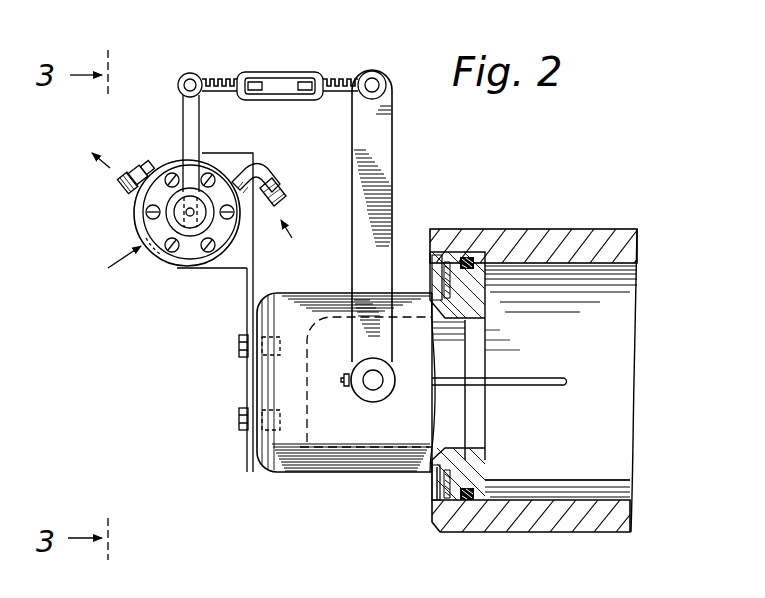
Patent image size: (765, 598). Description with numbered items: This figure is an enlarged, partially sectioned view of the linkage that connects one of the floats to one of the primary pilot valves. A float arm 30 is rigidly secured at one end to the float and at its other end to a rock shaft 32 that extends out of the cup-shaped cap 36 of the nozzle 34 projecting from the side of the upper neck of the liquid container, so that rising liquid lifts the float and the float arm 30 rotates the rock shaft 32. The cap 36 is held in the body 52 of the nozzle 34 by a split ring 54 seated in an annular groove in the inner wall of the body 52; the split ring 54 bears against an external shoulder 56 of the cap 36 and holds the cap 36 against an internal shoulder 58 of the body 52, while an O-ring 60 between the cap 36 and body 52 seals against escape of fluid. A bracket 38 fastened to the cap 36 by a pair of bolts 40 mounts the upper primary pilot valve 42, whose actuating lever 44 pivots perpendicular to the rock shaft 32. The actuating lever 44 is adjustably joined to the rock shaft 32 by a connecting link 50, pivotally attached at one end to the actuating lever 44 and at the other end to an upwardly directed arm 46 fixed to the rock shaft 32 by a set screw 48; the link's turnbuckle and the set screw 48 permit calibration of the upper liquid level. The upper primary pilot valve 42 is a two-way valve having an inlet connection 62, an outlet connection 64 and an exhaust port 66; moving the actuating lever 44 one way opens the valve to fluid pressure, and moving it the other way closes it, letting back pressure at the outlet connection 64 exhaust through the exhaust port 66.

The float arm 30 is at (548, 376).
The rock shaft 32 is at (376, 380).
The nozzle 34 is at (472, 228).
The cup-shaped cap 36 is at (305, 293).
The bracket 38 is at (247, 282).
The bolts 40 is at (239, 419).
The upper primary pilot valve 42 is at (145, 222).
The actuating lever 44 is at (183, 123).
The upwardly directed arm 46 is at (380, 141).
The set screw 48 is at (346, 381).
The connecting link 50 is at (333, 80).
The body 52 is at (248, 72).
The split ring 54 is at (440, 497).
The external shoulder 56 is at (454, 503).
The internal shoulder 58 is at (507, 498).
The O-ring 60 is at (467, 503).
The inlet connection 62 is at (268, 174).
The outlet connection 64 is at (112, 185).
The exhaust port 66 is at (141, 253).